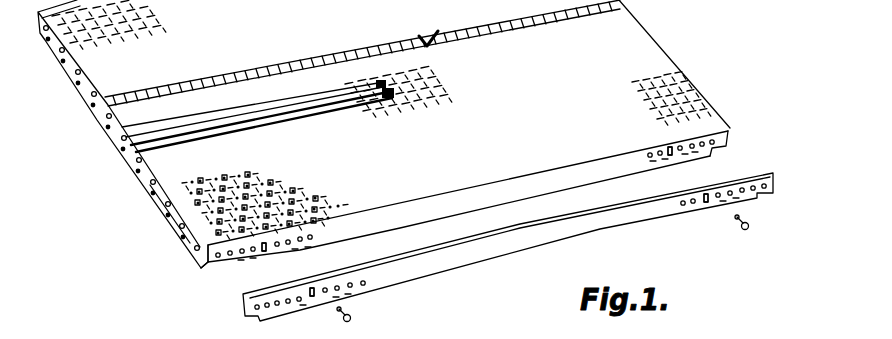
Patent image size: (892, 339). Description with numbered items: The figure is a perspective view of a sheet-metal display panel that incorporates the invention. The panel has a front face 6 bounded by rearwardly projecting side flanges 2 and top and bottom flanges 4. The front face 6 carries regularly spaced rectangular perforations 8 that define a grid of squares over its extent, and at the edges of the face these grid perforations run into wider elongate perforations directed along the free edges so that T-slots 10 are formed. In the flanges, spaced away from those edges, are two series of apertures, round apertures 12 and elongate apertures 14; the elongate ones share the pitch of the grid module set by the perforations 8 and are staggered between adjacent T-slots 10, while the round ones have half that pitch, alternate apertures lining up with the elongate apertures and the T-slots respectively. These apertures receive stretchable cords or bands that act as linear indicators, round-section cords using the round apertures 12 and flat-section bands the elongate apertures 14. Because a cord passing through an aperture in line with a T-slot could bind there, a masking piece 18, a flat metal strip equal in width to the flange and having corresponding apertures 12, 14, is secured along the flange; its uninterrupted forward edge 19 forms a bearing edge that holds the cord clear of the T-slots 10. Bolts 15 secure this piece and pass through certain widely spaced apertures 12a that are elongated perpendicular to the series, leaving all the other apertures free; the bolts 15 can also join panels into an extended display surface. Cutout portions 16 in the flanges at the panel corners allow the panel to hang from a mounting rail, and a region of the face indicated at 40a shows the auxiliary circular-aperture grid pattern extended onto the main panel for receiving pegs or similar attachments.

The side flanges 2 is at (84, 92).
The top and bottom flanges 4 is at (489, 193).
The front face 6 is at (417, 64).
The rectangular perforations 8 is at (292, 207).
The T-slots 10 is at (300, 228).
The round apertures 12 is at (232, 260).
The elongated apertures 12a is at (305, 287).
The elongate apertures 14 is at (175, 226).
The bolts 15 is at (352, 318).
The cutout portions 16 is at (728, 146).
The masking piece 18 is at (478, 261).
The forward edge 19 is at (551, 230).
The auxiliary grid pattern 40a is at (213, 198).